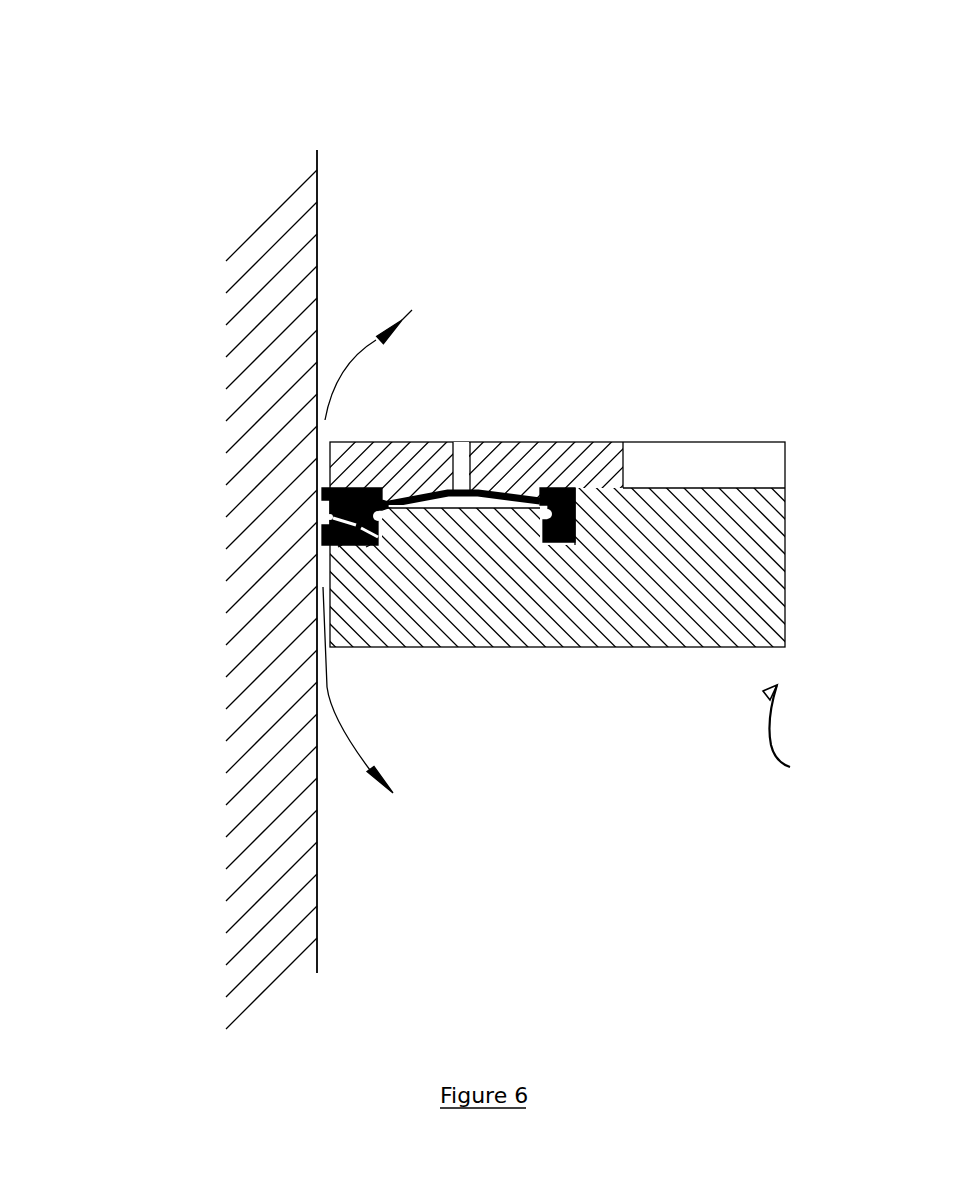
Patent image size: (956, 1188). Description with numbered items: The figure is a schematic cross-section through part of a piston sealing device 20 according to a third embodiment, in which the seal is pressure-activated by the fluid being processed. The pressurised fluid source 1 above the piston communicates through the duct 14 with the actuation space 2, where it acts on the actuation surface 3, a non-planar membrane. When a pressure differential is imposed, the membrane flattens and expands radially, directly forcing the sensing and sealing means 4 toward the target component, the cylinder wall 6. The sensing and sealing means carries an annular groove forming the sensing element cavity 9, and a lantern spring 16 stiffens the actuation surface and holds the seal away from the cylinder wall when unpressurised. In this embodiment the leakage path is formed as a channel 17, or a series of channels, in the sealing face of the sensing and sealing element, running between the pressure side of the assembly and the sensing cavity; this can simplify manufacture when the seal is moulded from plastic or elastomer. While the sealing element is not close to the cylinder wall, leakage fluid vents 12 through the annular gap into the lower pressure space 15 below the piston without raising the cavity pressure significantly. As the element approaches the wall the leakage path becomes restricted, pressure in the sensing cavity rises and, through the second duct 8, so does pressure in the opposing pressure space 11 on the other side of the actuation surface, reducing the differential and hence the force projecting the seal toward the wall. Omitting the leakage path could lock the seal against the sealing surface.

The pressurised fluid source 1 is at (527, 382).
The actuation space 2 is at (505, 490).
The actuation surface 3 is at (443, 492).
The sensing and sealing means 4 is at (370, 488).
The cylinder wall 6 is at (317, 320).
The second duct 8 is at (366, 545).
The sensing element cavity 9 is at (338, 547).
The opposing pressure space 11 is at (472, 503).
The vents 12 is at (400, 558).
The duct 14 is at (461, 453).
The lower pressure space 15 is at (288, 589).
The lantern spring 16 is at (517, 503).
The channel 17 is at (323, 498).
The piston sealing device 20 is at (806, 742).